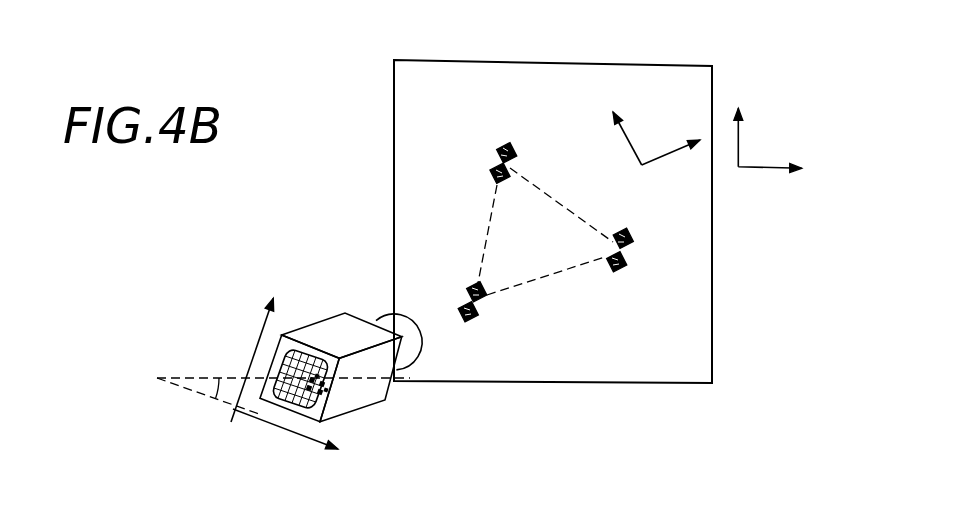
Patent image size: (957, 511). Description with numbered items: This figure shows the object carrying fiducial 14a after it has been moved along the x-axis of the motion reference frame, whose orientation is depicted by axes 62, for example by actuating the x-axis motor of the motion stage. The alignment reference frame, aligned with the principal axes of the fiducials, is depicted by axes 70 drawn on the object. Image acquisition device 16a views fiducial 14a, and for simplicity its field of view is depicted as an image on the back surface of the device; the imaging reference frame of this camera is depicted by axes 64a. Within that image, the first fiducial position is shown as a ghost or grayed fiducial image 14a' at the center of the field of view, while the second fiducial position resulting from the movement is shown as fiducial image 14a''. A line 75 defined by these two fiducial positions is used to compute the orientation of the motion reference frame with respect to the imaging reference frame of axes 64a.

The axes 70 is at (633, 150).
The axes 62 is at (740, 163).
The fiducial 14a is at (545, 291).
The line 75 is at (173, 378).
The axes 64a is at (242, 407).
The image acquisition device 16a is at (360, 343).
The fiducial image 14a' is at (292, 416).
The fiducial image 14a'' is at (386, 412).